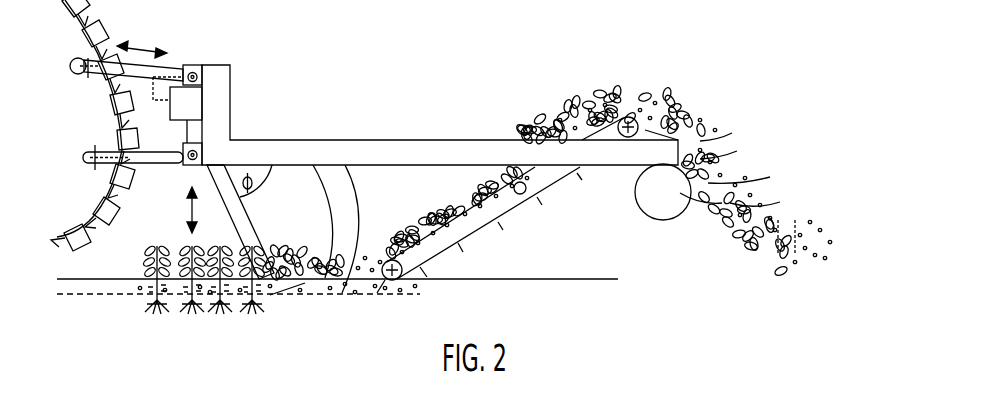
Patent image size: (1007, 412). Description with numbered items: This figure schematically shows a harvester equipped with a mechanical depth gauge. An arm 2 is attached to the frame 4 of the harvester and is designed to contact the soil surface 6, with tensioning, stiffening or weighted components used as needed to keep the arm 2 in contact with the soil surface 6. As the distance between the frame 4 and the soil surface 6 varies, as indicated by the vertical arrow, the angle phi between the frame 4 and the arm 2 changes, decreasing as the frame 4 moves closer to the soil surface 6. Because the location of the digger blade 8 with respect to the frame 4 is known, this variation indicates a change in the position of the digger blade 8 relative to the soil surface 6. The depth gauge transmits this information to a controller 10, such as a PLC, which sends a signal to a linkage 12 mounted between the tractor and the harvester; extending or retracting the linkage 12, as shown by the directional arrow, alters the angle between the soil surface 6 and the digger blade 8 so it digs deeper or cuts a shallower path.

The arm 2 is at (258, 228).
The frame 4 is at (280, 140).
The soil surface 6 is at (270, 282).
The digger blade 8 is at (288, 284).
The controller 10 is at (192, 107).
The linkage 12 is at (168, 67).